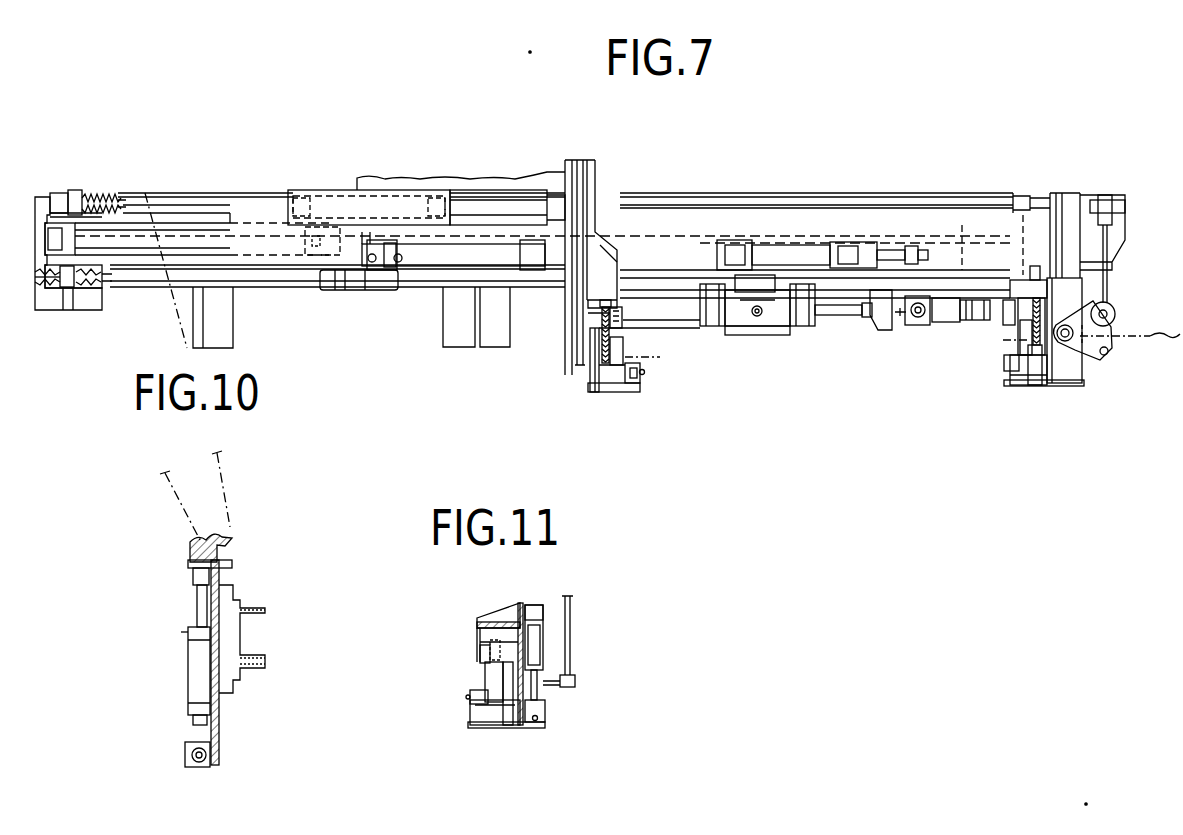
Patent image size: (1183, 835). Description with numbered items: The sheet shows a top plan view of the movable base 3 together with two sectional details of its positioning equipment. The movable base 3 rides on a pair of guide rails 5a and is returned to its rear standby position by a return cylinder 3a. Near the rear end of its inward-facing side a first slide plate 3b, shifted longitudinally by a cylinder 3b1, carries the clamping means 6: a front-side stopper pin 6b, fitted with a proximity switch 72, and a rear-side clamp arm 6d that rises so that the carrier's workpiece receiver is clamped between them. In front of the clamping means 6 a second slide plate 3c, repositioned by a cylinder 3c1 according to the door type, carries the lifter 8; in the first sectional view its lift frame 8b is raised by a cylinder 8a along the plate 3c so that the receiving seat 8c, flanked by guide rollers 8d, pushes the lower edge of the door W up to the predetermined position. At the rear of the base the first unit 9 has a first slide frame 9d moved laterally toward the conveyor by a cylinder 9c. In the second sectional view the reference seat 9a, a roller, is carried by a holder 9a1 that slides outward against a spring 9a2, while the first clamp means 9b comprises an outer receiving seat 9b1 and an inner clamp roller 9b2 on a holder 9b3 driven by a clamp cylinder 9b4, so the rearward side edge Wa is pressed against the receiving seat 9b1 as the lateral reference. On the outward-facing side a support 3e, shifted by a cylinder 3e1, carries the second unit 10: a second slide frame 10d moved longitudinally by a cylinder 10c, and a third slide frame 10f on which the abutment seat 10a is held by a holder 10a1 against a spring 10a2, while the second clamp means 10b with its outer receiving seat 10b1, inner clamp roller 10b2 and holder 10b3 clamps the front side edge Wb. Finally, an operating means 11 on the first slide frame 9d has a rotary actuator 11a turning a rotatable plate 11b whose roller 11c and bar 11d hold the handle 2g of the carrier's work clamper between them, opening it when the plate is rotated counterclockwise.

In FIG. 7, the movable base 3 is at (858, 218).
In FIG. 10, the movable base 3 is at (255, 608).
In FIG. 7, the return cylinder 3a is at (175, 236).
In FIG. 7, the first slide plate 3b is at (882, 328).
In FIG. 7, the cylinder 3b1 is at (776, 245).
In FIG. 7, the second slide plate 3c is at (652, 290).
In FIG. 10, the second slide plate 3c is at (220, 725).
In FIG. 7, the cylinder 3c1 is at (680, 322).
In FIG. 10, the cylinder 3c1 is at (185, 748).
In FIG. 7, the support 3e is at (296, 210).
In FIG. 7, the cylinder 3e1 is at (425, 265).
In FIG. 7, the guide rails 5a is at (205, 205).
In FIG. 7, the clamping means 6 is at (946, 334).
In FIG. 7, the front-side stopper pin 6b is at (920, 320).
In FIG. 7, the rear-side clamp arm 6d is at (958, 325).
In FIG. 7, the proximity switch 72 is at (908, 315).
In FIG. 7, the lifter 8 is at (772, 345).
In FIG. 10, the cylinder 8a is at (195, 665).
In FIG. 7, the lift frame 8b is at (812, 322).
In FIG. 10, the lift frame 8b is at (193, 575).
In FIG. 7, the receiving seat 8c is at (746, 320).
In FIG. 10, the receiving seat 8c is at (195, 560).
In FIG. 7, the guide rollers 8d is at (712, 320).
In FIG. 10, the guide rollers 8d is at (226, 537).
In FIG. 7, the first unit 9 is at (1068, 390).
In FIG. 11, the first unit 9 is at (580, 616).
In FIG. 7, the reference seat 9a is at (1026, 338).
In FIG. 11, the reference seat 9a is at (485, 678).
In FIG. 7, the holder 9a1 is at (1034, 390).
In FIG. 11, the holder 9a1 is at (510, 725).
In FIG. 7, the spring 9a2 is at (1052, 335).
In FIG. 11, the spring 9a2 is at (490, 640).
In FIG. 7, the first clamp means 9b is at (1005, 378).
In FIG. 11, the first clamp means 9b is at (469, 735).
In FIG. 7, the outer receiving seat 9b1 is at (1008, 322).
In FIG. 11, the outer receiving seat 9b1 is at (480, 658).
In FIG. 7, the inner clamp roller 9b2 is at (1018, 388).
In FIG. 11, the inner clamp roller 9b2 is at (470, 698).
In FIG. 7, the holder 9b3 is at (1044, 388).
In FIG. 11, the holder 9b3 is at (493, 730).
In FIG. 11, the clamp cylinder 9b4 is at (543, 650).
In FIG. 7, the cylinder 9c is at (1106, 200).
In FIG. 7, the first slide frame 9d is at (1035, 290).
In FIG. 11, the first slide frame 9d is at (510, 614).
In FIG. 7, the second unit 10 is at (569, 362).
In FIG. 7, the abutment seat 10a is at (623, 346).
In FIG. 7, the holder 10a1 is at (590, 372).
In FIG. 7, the spring 10a2 is at (600, 310).
In FIG. 7, the second clamp means 10b is at (643, 400).
In FIG. 7, the outer receiving seat 10b1 is at (648, 297).
In FIG. 7, the inner clamp roller 10b2 is at (640, 378).
In FIG. 7, the holder 10b3 is at (612, 393).
In FIG. 7, the cylinder 10c is at (336, 215).
In FIG. 7, the second slide frame 10d is at (540, 187).
In FIG. 7, the third slide frame 10f is at (600, 247).
In FIG. 7, the operating means 11 is at (1094, 355).
In FIG. 7, the rotary actuator 11a is at (1075, 308).
In FIG. 7, the rotatable plate 11b is at (1109, 351).
In FIG. 7, the roller 11c is at (1115, 315).
In FIG. 7, the bar 11d is at (1100, 358).
In FIG. 7, the handle 2g is at (1131, 343).
In FIG. 10, the door W is at (226, 482).
In FIG. 7, the rearward side edge Wa is at (1001, 358).
In FIG. 7, the front side edge Wb is at (660, 365).